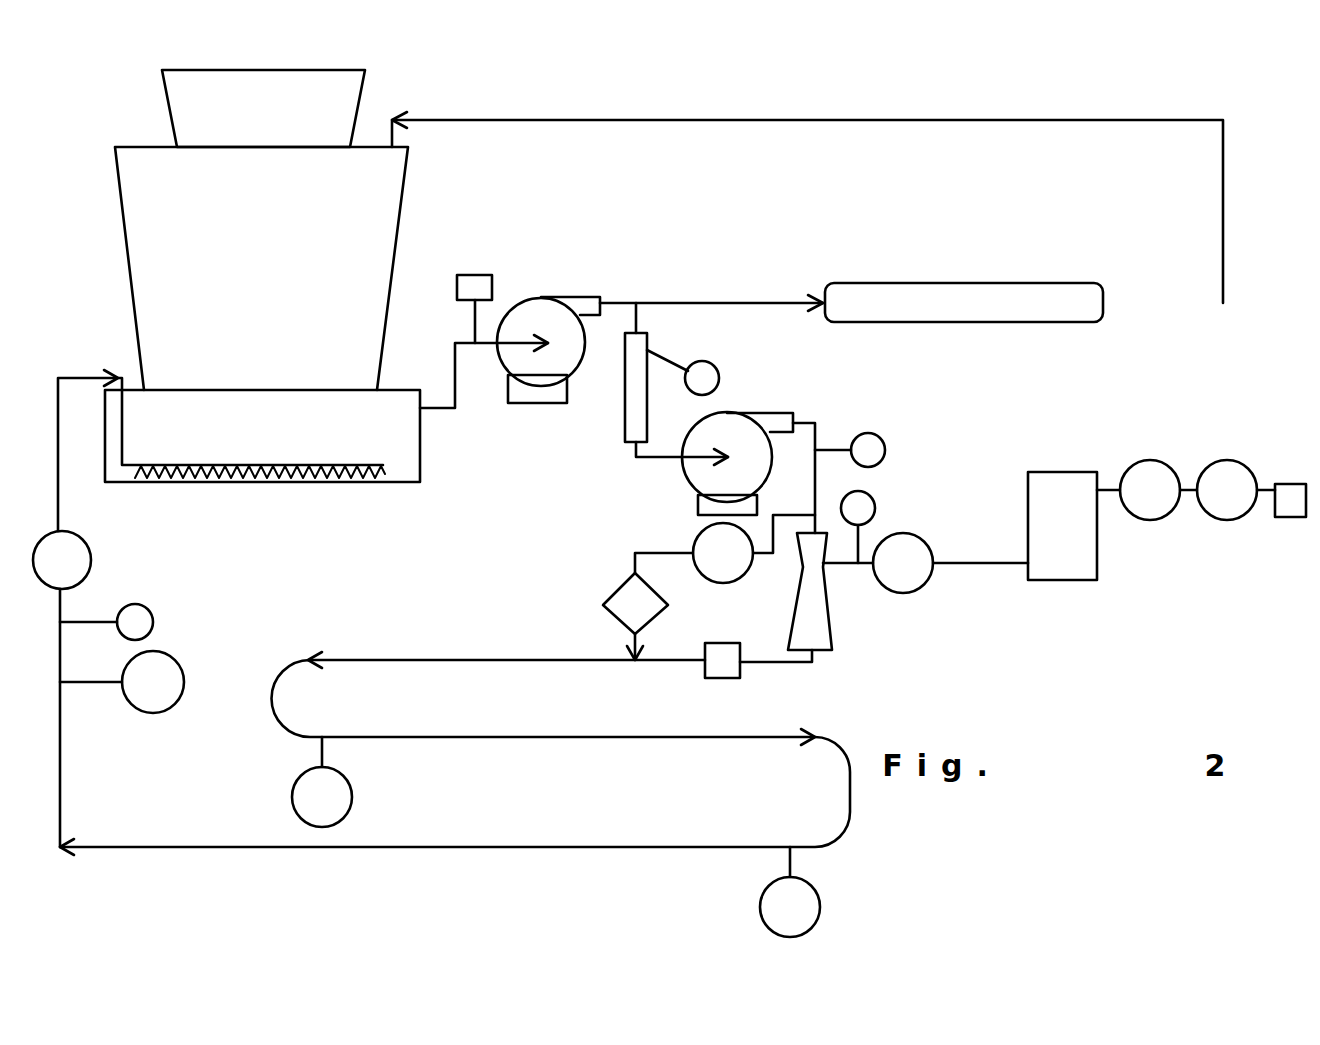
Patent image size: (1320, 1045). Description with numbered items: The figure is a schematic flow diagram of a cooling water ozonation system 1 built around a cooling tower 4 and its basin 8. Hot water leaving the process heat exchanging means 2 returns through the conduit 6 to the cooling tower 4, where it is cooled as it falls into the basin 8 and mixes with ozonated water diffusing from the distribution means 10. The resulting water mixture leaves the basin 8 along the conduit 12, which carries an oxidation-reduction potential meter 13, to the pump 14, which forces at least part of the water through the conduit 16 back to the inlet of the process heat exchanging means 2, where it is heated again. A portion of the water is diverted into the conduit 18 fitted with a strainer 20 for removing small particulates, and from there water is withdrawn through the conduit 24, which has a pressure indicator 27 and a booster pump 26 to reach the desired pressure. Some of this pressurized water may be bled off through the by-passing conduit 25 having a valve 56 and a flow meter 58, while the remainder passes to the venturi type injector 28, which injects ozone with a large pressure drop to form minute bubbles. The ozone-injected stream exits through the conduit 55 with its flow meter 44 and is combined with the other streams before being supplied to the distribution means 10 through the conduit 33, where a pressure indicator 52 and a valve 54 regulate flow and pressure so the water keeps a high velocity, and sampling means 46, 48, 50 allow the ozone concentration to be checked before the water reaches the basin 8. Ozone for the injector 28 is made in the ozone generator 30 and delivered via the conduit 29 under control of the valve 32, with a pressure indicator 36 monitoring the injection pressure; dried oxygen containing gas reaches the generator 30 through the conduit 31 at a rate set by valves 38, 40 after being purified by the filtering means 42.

The cooling water ozonation system 1 is at (815, 103).
The process heat exchanging means 2 is at (985, 305).
The cooling tower 4 is at (235, 263).
The conduit 6 is at (695, 121).
The basin 8 is at (235, 440).
The distribution means 10 is at (238, 482).
The conduit 12 is at (456, 385).
The oxidation-reduction potential meter 13 is at (470, 282).
The pump 14 is at (550, 362).
The conduit 16 is at (700, 303).
The conduit 18 is at (633, 445).
The strainer 20 is at (715, 366).
The conduit 24 is at (690, 460).
The by-passing conduit 25 is at (632, 552).
The booster pump 26 is at (735, 450).
The pressure indicator 27 is at (868, 433).
The venturi type injector 28 is at (805, 600).
The conduit 29 is at (972, 560).
The ozone generator 30 is at (1062, 526).
The conduit 31 is at (1112, 488).
The valve 32 is at (888, 592).
The conduit 33 is at (470, 662).
The pressure indicator 36 is at (862, 517).
The valve 38 is at (1137, 518).
The valve 40 is at (1208, 510).
The filtering means 42 is at (1292, 483).
The flow meter 44 is at (718, 660).
The sampling means 46 is at (340, 790).
The sampling means 48 is at (797, 903).
The sampling means 50 is at (145, 697).
The pressure indicator 52 is at (128, 612).
The valve 54 is at (85, 550).
The conduit 55 is at (765, 663).
The valve 56 is at (698, 572).
The flow meter 58 is at (625, 610).